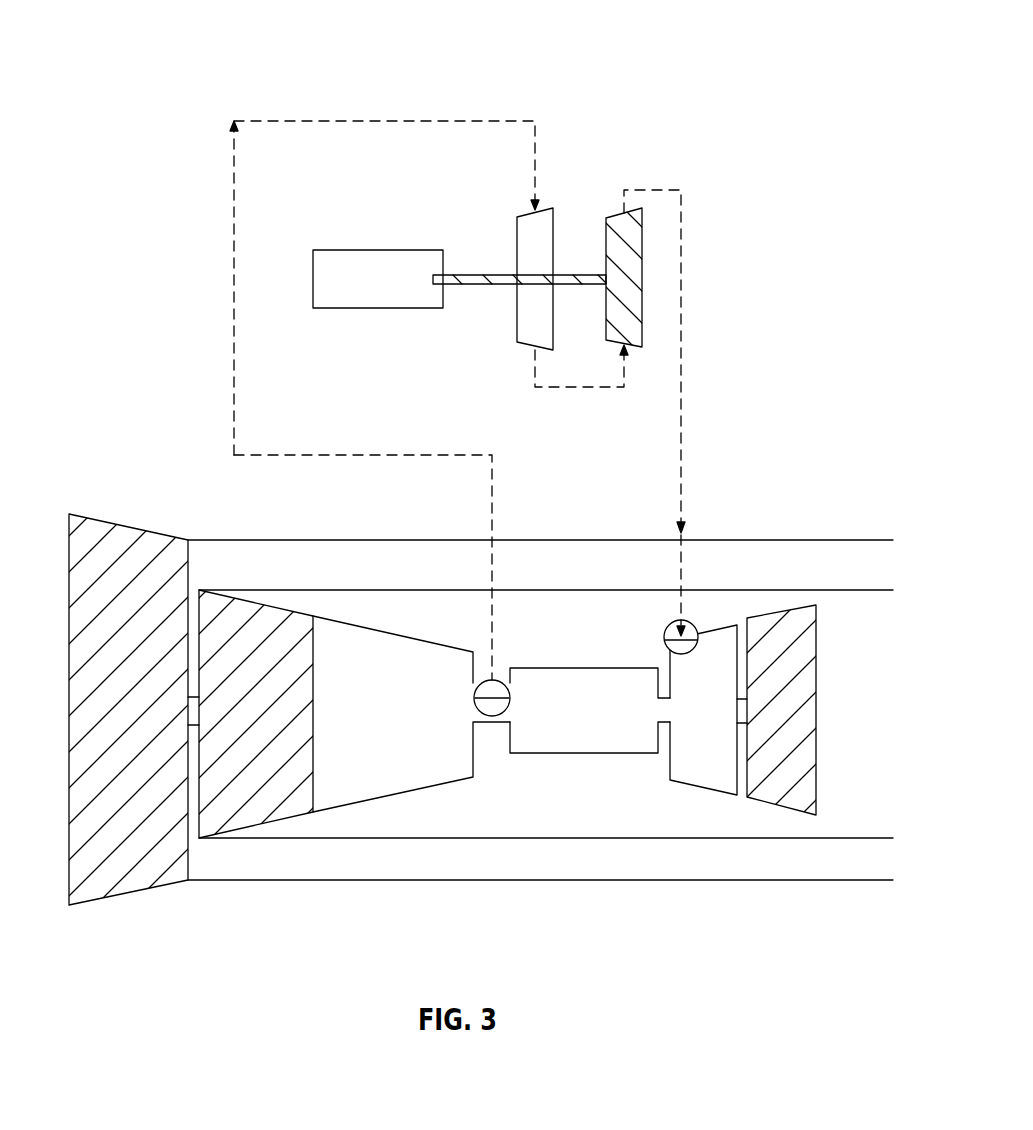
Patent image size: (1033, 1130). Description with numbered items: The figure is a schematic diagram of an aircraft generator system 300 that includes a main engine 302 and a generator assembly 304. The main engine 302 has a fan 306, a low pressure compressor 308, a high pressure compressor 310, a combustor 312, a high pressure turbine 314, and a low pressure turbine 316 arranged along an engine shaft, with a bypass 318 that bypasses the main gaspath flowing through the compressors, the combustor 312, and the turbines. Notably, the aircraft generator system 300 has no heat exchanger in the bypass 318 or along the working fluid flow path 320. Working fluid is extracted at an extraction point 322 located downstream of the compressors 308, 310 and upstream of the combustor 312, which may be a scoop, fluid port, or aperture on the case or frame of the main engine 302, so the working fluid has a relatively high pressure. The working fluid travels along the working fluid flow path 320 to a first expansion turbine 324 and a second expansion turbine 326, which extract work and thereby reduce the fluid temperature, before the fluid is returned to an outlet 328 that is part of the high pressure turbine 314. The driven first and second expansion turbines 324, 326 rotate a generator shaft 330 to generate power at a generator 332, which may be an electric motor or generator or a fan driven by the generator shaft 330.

The aircraft generator system 300 is at (158, 56).
The main engine 302 is at (58, 718).
The generator assembly 304 is at (296, 280).
The fan 306 is at (91, 885).
The low pressure compressor 308 is at (232, 820).
The high pressure compressor 310 is at (339, 783).
The combustor 312 is at (557, 732).
The high pressure turbine 314 is at (697, 765).
The low pressure turbine 316 is at (795, 800).
The bypass 318 is at (865, 567).
The working fluid flow path 320 is at (233, 411).
The extraction point 322 is at (494, 680).
The first expansion turbine 324 is at (528, 316).
The second expansion turbine 326 is at (605, 245).
The outlet 328 is at (665, 640).
The generator shaft 330 is at (500, 277).
The generator 332 is at (367, 265).